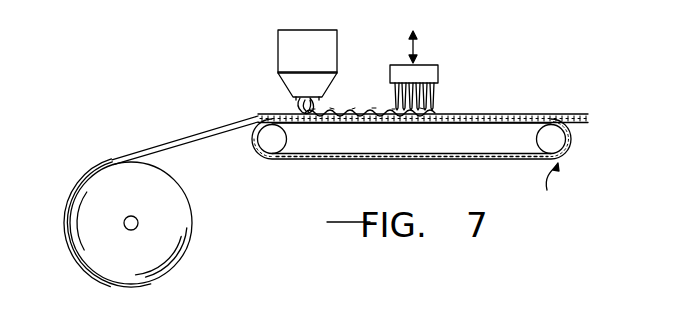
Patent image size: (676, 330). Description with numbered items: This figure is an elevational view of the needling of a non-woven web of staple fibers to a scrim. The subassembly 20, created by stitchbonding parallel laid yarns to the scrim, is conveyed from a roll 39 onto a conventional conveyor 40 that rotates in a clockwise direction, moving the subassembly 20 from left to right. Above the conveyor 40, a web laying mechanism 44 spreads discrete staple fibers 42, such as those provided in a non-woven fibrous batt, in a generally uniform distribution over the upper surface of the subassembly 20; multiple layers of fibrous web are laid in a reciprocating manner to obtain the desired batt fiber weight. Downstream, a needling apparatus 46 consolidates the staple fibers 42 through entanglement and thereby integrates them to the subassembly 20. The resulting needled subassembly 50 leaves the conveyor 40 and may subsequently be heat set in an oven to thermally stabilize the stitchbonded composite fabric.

The subassembly 20 is at (170, 142).
The roll 39 is at (180, 208).
The conveyor 40 is at (308, 160).
The staple fibers 42 is at (298, 110).
The web laying mechanism 44 is at (290, 57).
The needling apparatus 46 is at (438, 73).
The needled subassembly 50 is at (484, 112).